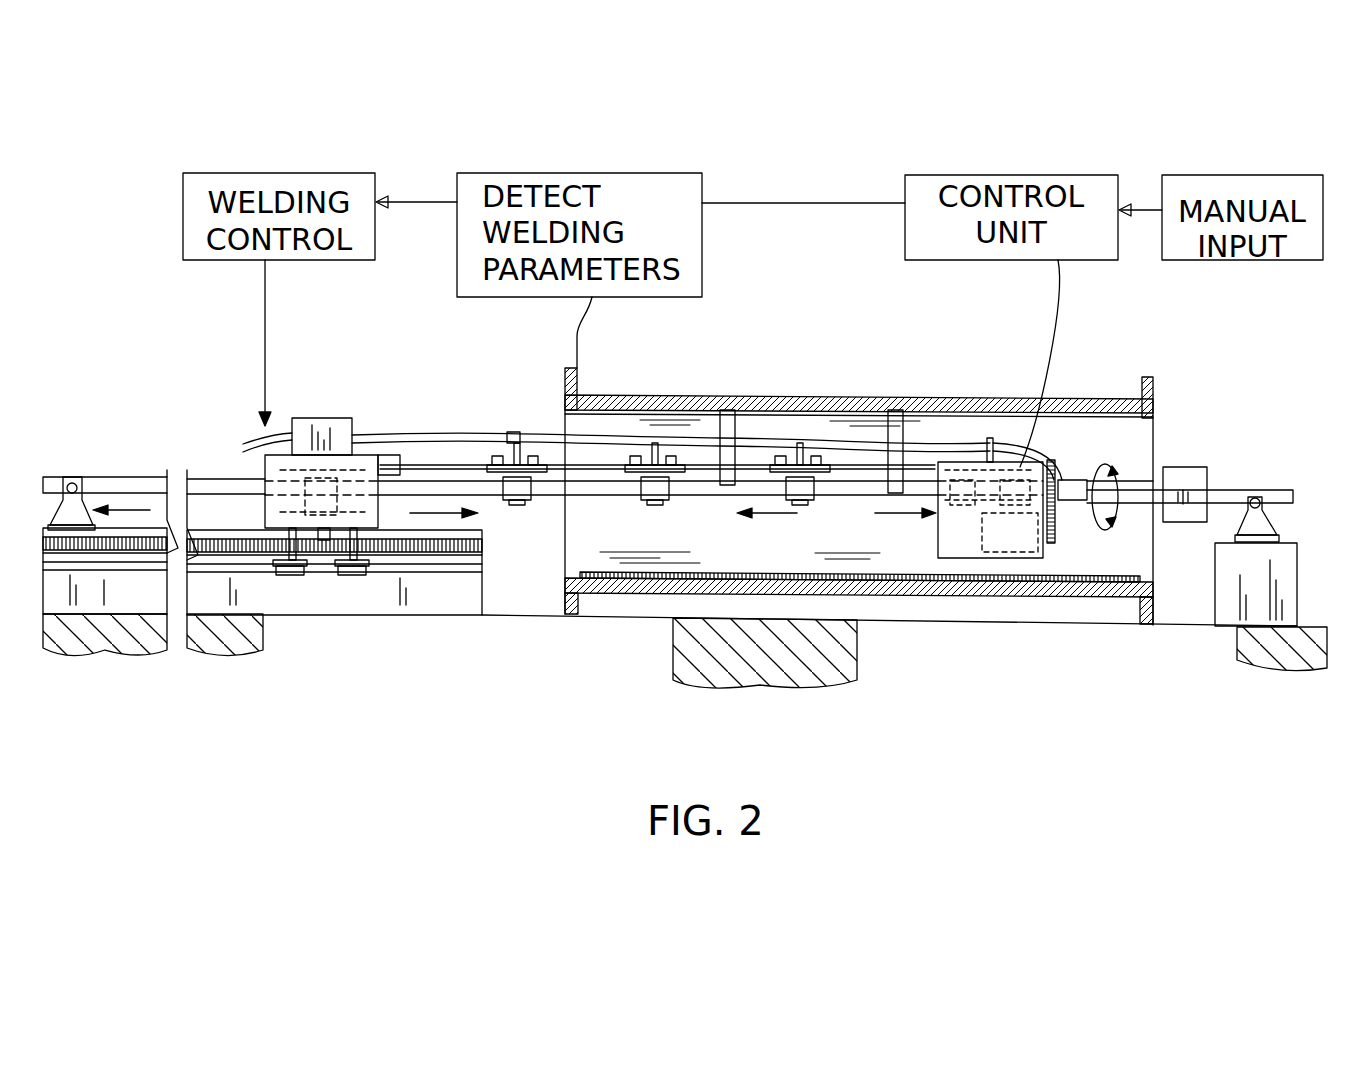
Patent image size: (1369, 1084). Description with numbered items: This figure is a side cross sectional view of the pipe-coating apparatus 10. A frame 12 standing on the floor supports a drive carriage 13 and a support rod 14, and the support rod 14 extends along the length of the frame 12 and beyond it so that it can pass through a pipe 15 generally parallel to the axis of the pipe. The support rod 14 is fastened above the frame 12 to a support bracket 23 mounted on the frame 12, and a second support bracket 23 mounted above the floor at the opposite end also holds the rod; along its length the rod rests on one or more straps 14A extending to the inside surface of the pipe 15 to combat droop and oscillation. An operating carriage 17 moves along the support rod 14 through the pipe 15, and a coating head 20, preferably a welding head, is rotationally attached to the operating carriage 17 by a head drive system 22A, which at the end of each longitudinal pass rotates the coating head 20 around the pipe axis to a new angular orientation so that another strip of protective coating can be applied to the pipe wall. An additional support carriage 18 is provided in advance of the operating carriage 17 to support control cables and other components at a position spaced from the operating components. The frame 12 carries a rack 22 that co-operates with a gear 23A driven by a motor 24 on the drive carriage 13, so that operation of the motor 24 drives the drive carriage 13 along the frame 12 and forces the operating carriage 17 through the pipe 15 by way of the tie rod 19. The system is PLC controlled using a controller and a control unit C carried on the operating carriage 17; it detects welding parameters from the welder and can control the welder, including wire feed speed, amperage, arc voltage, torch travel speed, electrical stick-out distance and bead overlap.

The apparatus 10 is at (368, 342).
The frame 12 is at (104, 588).
The drive carriage 13 is at (277, 468).
The support rod 14 is at (573, 487).
The straps 14A is at (727, 398).
The pipe 15 is at (797, 400).
The operating carriage 17 is at (963, 467).
The support carriage 18 is at (1183, 478).
The tie rod 19 is at (885, 467).
The coating head 20 is at (1083, 455).
The rack 22 is at (483, 547).
The head drive system 22A is at (1057, 440).
The support bracket 23 is at (92, 470).
The gear 23A is at (322, 553).
The motor 24 is at (328, 503).
The control unit C is at (1007, 540).